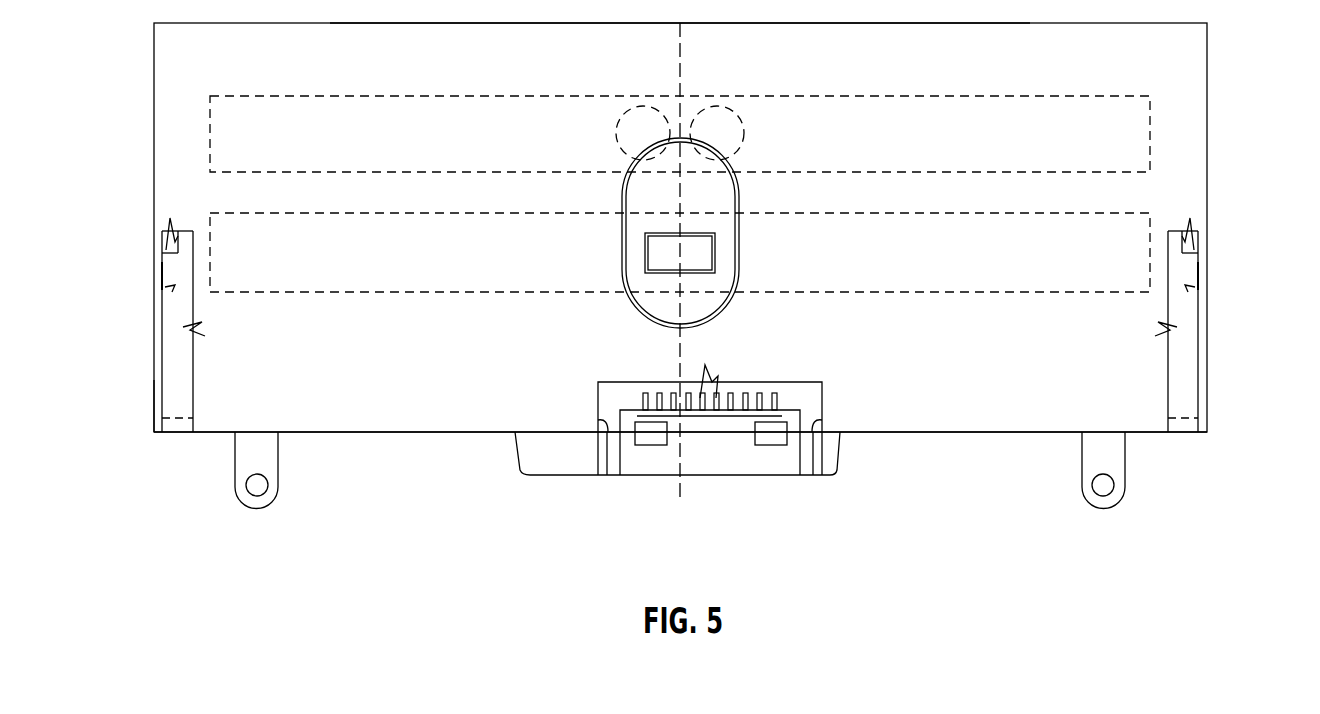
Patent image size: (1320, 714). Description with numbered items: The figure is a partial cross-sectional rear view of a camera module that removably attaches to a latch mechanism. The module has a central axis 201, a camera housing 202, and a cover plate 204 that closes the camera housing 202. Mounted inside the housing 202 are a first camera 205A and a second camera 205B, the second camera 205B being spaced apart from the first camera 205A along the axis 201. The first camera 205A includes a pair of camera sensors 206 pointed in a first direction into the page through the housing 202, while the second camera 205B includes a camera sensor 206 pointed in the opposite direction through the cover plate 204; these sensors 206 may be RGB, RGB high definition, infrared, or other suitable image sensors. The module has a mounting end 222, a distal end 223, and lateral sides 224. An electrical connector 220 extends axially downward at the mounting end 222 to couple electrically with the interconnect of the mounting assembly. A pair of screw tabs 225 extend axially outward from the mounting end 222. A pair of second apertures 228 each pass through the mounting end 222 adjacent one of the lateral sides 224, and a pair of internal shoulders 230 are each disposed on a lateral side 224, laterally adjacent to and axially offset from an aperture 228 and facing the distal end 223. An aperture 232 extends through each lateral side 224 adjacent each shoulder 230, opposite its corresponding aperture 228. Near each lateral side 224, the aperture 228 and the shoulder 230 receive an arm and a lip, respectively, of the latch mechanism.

The central axis 201 is at (683, 500).
The camera housing 202 is at (172, 397).
The cover plate 204 is at (163, 82).
The first camera 205A is at (305, 95).
The second camera 205B is at (340, 212).
The camera sensor 206 is at (640, 108).
The electrical connector 220 is at (740, 397).
The mounting end 222 is at (355, 432).
The distal end 223 is at (305, 0).
The lateral side 224 is at (1207, 78).
The screw tab 225 is at (256, 498).
The second aperture 228 is at (168, 434).
The internal shoulder 230 is at (170, 290).
The aperture 232 is at (162, 278).